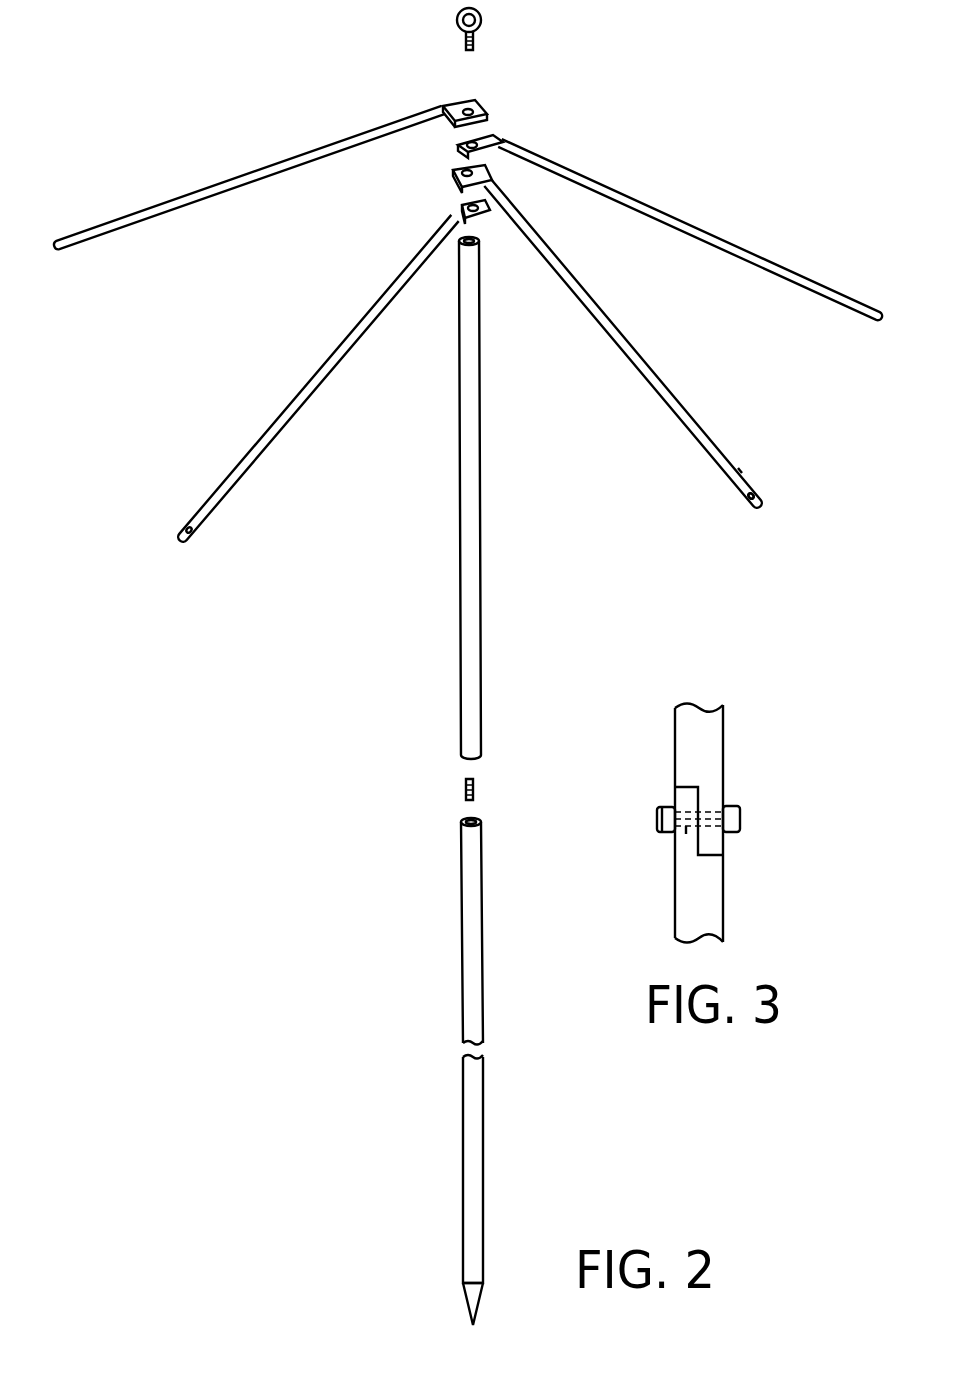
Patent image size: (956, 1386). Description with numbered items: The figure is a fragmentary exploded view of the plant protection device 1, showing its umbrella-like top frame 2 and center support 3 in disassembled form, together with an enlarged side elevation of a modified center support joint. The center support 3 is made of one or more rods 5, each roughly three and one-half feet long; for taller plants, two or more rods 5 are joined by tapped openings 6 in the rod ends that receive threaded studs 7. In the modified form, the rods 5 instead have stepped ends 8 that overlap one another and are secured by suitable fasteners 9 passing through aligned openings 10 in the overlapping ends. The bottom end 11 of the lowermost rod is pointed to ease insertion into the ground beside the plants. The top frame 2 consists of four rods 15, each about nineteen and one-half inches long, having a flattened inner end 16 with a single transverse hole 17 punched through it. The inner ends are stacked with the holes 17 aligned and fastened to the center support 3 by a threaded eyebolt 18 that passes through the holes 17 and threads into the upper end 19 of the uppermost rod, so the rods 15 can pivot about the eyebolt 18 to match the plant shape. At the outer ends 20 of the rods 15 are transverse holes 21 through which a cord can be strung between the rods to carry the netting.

In FIG. 2, the plant protection device 1 is at (205, 171).
In FIG. 2, the top frame 2 is at (624, 168).
In FIG. 2, the center support 3 is at (438, 733).
In FIG. 2, the rods 5 is at (478, 492).
In FIG. 3, the rods 5 is at (712, 740).
In FIG. 2, the tapped openings 6 is at (477, 818).
In FIG. 2, the threaded studs 7 is at (465, 788).
In FIG. 3, the stepped ends 8 is at (682, 797).
In FIG. 3, the fasteners 9 is at (668, 827).
In FIG. 3, the aligned openings 10 is at (688, 832).
In FIG. 2, the bottom end 11 is at (463, 1290).
In FIG. 2, the rods 15 is at (240, 188).
In FIG. 2, the flattened inner end 16 is at (461, 108).
In FIG. 2, the transverse hole 17 is at (472, 114).
In FIG. 2, the threaded eyebolt 18 is at (483, 22).
In FIG. 2, the upper end 19 is at (470, 250).
In FIG. 2, the outer ends 20 is at (741, 471).
In FIG. 2, the transverse holes 21 is at (753, 496).